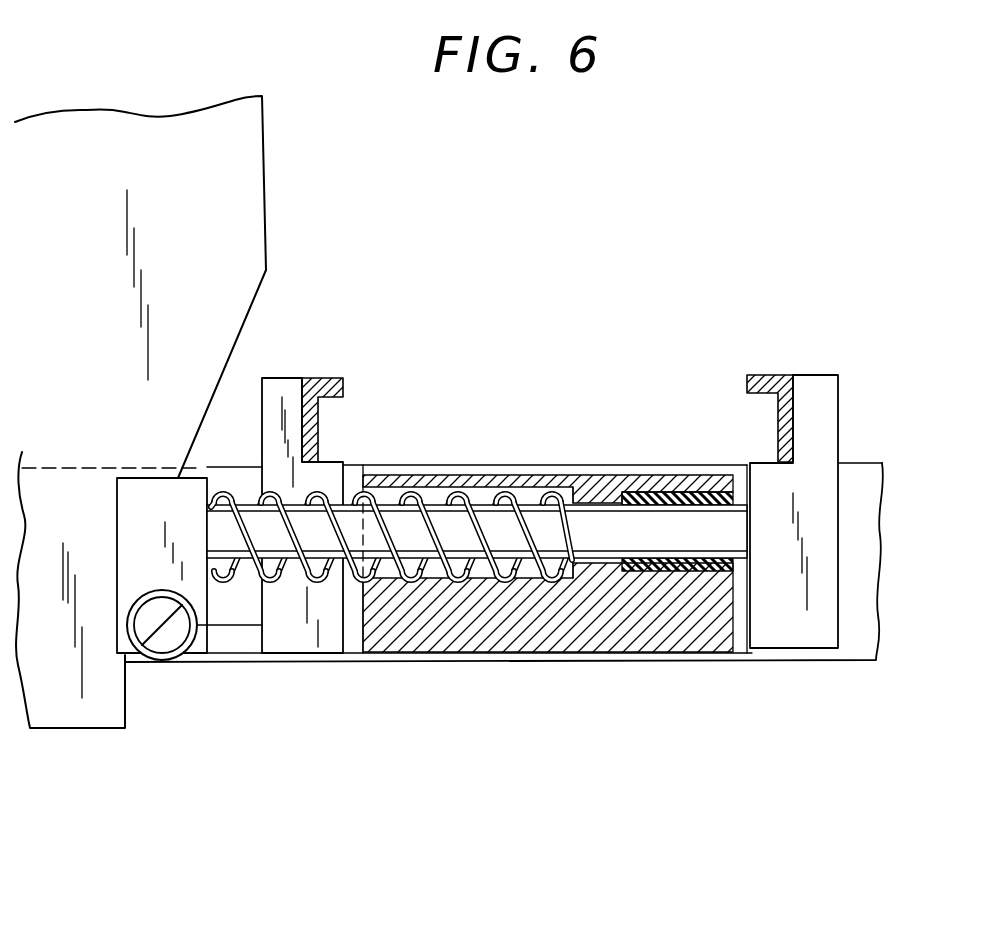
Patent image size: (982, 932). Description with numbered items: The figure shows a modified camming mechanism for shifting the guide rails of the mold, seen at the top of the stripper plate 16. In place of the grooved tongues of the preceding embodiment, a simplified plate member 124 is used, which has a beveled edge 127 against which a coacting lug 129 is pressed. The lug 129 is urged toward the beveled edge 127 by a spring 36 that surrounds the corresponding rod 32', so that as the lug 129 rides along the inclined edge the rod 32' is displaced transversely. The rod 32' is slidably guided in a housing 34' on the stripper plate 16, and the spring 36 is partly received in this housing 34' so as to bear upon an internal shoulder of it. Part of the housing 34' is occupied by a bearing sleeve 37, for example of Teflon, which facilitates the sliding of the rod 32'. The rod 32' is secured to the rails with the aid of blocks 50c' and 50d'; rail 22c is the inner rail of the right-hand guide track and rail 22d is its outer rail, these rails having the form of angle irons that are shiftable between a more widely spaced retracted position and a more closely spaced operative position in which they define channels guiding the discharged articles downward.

The beveled edge 127 is at (266, 266).
The plate member 124 is at (218, 318).
The stripper plate 16 is at (250, 650).
The lug 129 is at (170, 660).
The spring 36 is at (353, 490).
The housing 34' is at (555, 589).
The bearing sleeve 37 is at (683, 497).
The rod 32' is at (477, 495).
The block 50c' is at (315, 498).
The inner rail 22c is at (337, 382).
The block 50d' is at (794, 486).
The outer rail 22d is at (760, 375).